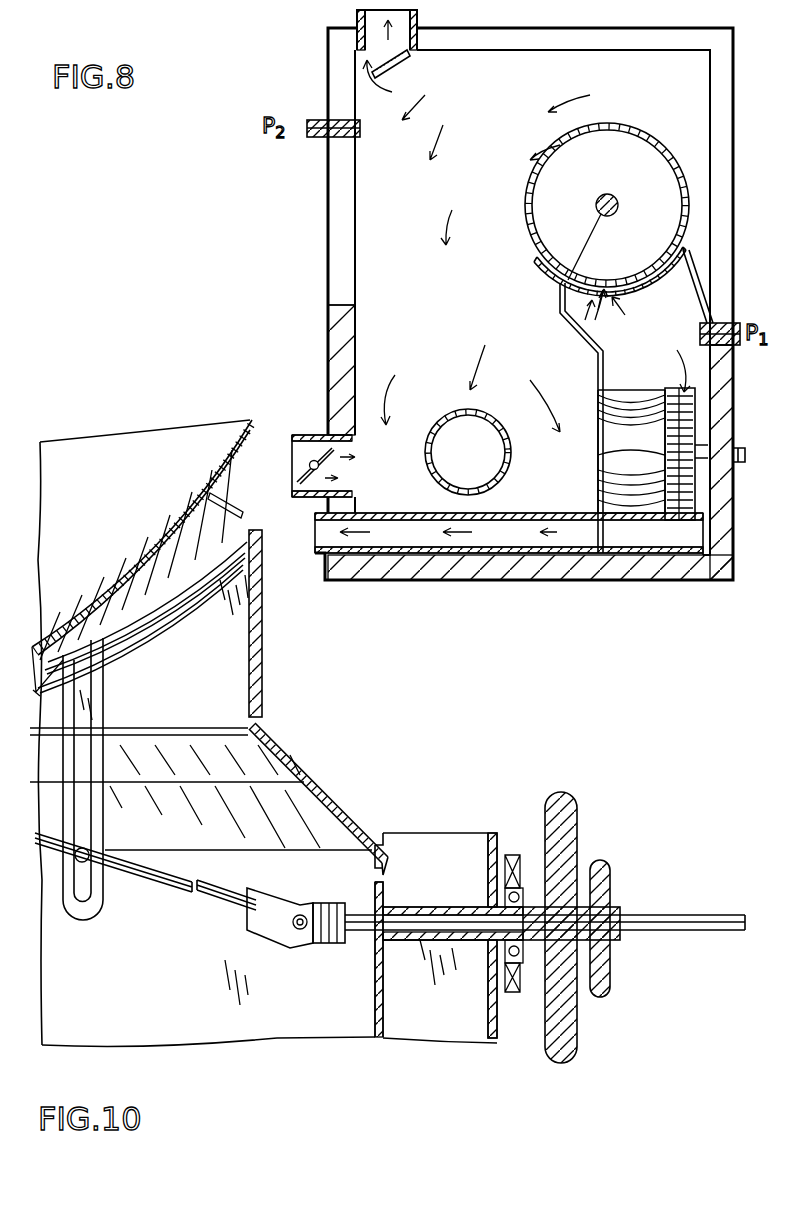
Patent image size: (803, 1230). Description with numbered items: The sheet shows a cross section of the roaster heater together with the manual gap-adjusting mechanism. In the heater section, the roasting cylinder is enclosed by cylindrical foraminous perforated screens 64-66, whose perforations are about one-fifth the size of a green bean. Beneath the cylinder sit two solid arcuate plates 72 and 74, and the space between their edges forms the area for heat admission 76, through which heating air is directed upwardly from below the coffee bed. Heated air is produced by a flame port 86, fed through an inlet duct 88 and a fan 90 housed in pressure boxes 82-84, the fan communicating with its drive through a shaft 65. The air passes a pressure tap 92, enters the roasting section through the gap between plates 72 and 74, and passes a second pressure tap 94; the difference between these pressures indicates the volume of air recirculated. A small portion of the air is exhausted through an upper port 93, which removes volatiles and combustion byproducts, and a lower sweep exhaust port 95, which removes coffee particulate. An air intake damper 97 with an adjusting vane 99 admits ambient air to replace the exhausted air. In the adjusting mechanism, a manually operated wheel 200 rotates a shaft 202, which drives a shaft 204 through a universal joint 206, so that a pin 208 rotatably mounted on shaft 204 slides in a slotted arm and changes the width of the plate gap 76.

In FIG. 8, the upper exhaust port 93 is at (392, 66).
In FIG. 8, the pressure tap P2 94 is at (315, 118).
In FIG. 8, the foraminous perforated screens 64-66 is at (686, 108).
In FIG. 8, the area for heat admission 76 is at (650, 300).
In FIG. 8, the solid arcuate plate 72 is at (560, 302).
In FIG. 8, the solid arcuate plate 74 is at (618, 302).
In FIG. 8, the pressure tap P1 92 is at (738, 322).
In FIG. 8, the fan 90 is at (672, 392).
In FIG. 8, the pressure boxes 82-84 is at (660, 447).
In FIG. 8, the inlet duct 88 is at (640, 508).
In FIG. 8, the shaft 65 is at (748, 452).
In FIG. 8, the flame port 86 is at (485, 452).
In FIG. 8, the air intake damper 97 is at (312, 434).
In FIG. 8, the adjusting vane 99 is at (306, 465).
In FIG. 8, the lower exhaust port 95 is at (540, 534).
In FIG. 10, the pin 208 is at (88, 850).
In FIG. 10, the shaft 204 is at (170, 893).
In FIG. 10, the universal joint 206 is at (305, 944).
In FIG. 10, the shaft 202 is at (444, 912).
In FIG. 10, the manually operated wheel 200 is at (572, 1050).